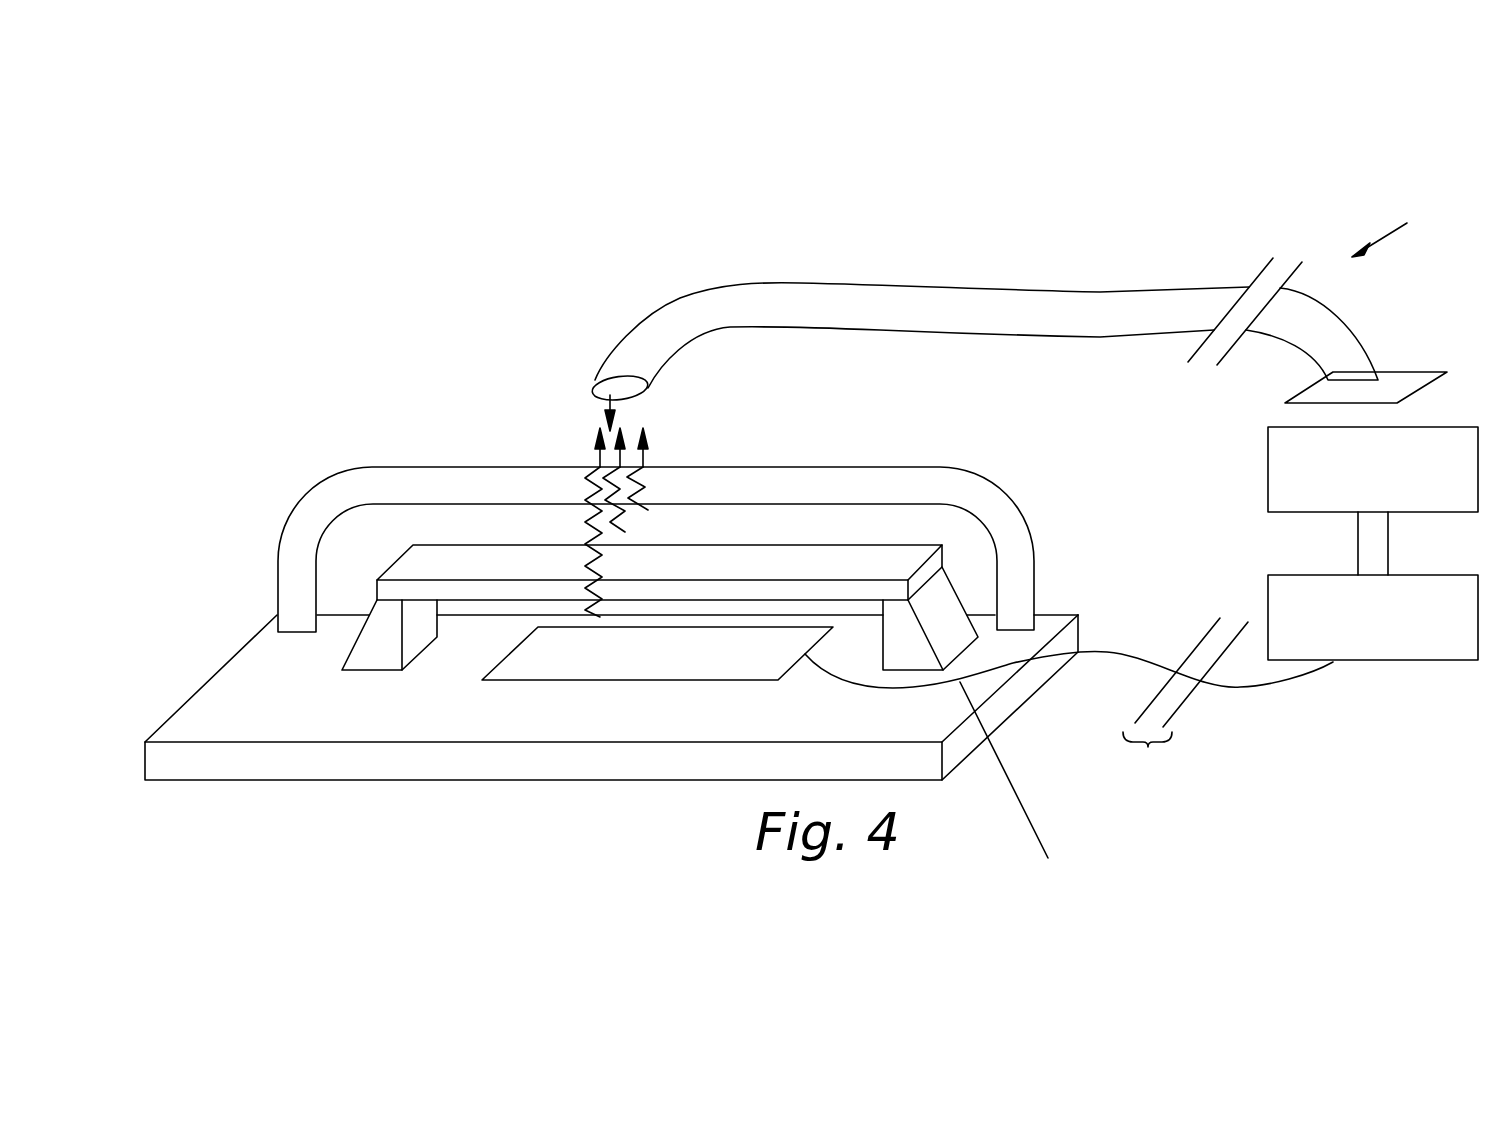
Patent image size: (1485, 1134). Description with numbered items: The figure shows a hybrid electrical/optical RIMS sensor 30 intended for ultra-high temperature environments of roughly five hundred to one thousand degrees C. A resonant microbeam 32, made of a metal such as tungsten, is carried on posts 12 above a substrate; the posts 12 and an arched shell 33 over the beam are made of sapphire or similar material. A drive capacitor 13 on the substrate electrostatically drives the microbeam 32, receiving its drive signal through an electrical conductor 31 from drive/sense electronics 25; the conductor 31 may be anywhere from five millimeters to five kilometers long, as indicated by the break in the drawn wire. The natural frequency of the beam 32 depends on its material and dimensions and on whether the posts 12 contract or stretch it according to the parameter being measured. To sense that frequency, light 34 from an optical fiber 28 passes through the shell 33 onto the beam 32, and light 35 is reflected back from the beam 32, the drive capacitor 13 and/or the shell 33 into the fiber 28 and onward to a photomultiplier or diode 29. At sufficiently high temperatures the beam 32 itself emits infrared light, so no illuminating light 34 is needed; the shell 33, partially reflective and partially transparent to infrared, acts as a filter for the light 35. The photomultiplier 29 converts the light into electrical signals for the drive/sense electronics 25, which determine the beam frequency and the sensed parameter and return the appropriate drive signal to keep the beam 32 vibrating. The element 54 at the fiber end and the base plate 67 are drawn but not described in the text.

The posts 12 is at (381, 657).
The drive capacitor 13 is at (574, 683).
The drive/sense electronics 25 is at (1267, 593).
The optical fiber 28 is at (1207, 285).
The photo multiplier or diode 29 is at (1267, 465).
The electrical/optical RIMS sensor 30 is at (1396, 231).
The electrical conductor 31 is at (1275, 690).
The resonant microbeam 32 is at (807, 553).
The shell 33 is at (1002, 517).
The light 34 is at (610, 403).
The light 35 is at (648, 447).
The light detector 54 is at (1305, 390).
The substrate 67 is at (1017, 688).